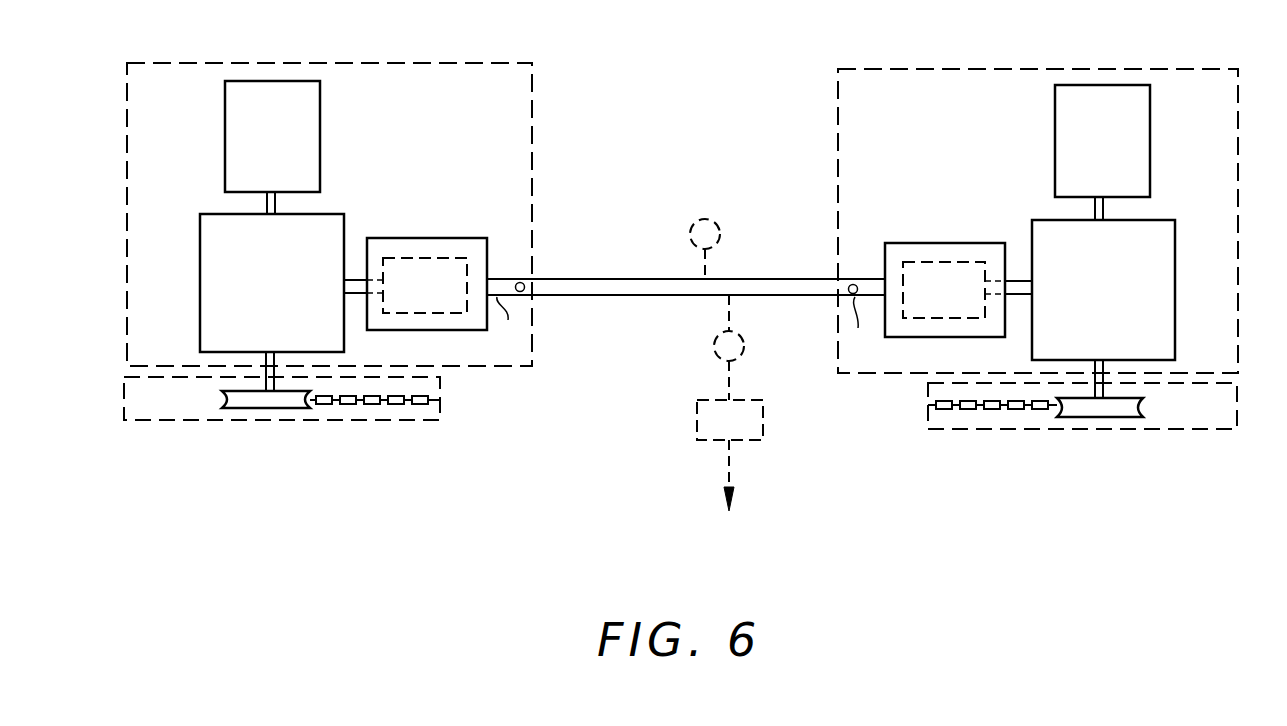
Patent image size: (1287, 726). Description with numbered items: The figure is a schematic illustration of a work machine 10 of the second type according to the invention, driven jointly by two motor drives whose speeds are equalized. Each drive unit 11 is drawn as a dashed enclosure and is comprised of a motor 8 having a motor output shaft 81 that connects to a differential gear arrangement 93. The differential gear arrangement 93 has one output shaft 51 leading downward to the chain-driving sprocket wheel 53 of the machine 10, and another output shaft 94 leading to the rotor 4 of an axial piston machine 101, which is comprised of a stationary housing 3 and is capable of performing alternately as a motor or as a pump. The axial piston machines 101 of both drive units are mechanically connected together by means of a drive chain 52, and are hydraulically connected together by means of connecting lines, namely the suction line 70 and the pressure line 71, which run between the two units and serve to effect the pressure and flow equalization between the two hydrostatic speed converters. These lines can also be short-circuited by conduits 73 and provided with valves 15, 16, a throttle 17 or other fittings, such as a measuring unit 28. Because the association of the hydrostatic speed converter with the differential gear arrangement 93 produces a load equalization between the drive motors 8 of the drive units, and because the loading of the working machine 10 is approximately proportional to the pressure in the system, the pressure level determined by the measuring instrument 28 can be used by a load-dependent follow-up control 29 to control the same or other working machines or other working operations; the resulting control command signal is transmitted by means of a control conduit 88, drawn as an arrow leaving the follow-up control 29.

The stationary housing 3 is at (473, 330).
The rotor 4 is at (450, 313).
The motor 8 is at (258, 81).
The work machine 10 is at (297, 420).
The drive unit 11 is at (533, 73).
The valve 15 is at (710, 220).
The valve 16 is at (524, 283).
The throttle 17 is at (705, 234).
The measuring unit 28 is at (744, 346).
The load-dependent follow-up control 29 is at (760, 420).
The output shaft 51 is at (268, 386).
The drive chain 52 is at (425, 408).
The chain-driving sprocket wheel 53 is at (243, 402).
The suction line 70 is at (652, 279).
The pressure line 71 is at (672, 296).
The conduit 73 is at (682, 322).
The motor output shaft 81 is at (268, 204).
The control conduit 88 is at (730, 488).
The differential gear arrangement 93 is at (199, 288).
The output shaft 94 is at (355, 280).
The axial piston machine 101 is at (432, 240).